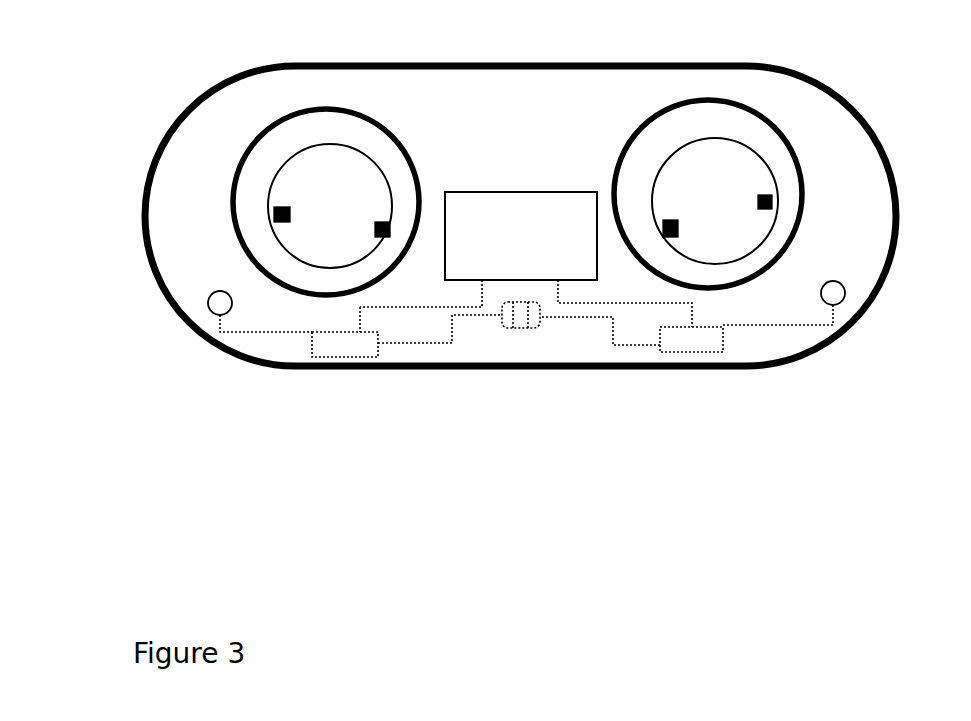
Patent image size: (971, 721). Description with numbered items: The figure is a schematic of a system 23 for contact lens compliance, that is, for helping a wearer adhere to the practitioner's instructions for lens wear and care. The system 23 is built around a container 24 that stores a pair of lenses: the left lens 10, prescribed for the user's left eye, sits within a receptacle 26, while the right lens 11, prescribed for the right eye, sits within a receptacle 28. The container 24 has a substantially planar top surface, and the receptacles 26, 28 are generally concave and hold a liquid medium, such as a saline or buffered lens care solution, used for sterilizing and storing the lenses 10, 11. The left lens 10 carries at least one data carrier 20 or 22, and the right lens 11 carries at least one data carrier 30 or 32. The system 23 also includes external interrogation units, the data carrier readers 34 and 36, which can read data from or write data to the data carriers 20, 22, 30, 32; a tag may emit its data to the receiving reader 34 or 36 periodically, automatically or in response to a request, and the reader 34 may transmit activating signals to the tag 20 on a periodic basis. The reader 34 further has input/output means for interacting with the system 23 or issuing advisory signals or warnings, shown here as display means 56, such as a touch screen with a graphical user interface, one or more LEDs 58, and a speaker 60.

The left lens 10 is at (285, 163).
The right lens 11 is at (745, 258).
The data carrier 20 is at (383, 222).
The data carrier 22 is at (274, 214).
The system 23 is at (503, 520).
The container 24 is at (597, 367).
The receptacle 26 is at (256, 270).
The receptacle 28 is at (779, 128).
The data carrier 30 is at (670, 220).
The data carrier 32 is at (772, 201).
The data carrier reader 34 is at (345, 357).
The data carrier reader 36 is at (707, 352).
The display means 56 is at (520, 192).
The LED 58 is at (209, 303).
The speaker 60 is at (512, 328).